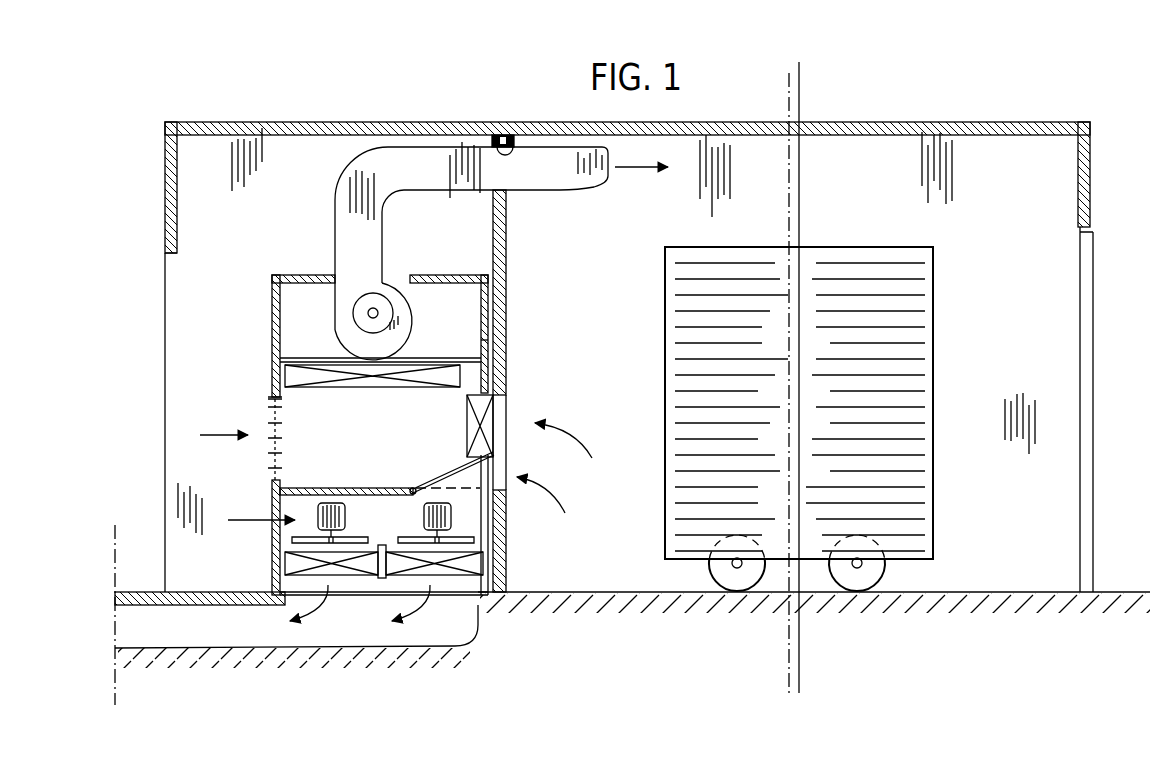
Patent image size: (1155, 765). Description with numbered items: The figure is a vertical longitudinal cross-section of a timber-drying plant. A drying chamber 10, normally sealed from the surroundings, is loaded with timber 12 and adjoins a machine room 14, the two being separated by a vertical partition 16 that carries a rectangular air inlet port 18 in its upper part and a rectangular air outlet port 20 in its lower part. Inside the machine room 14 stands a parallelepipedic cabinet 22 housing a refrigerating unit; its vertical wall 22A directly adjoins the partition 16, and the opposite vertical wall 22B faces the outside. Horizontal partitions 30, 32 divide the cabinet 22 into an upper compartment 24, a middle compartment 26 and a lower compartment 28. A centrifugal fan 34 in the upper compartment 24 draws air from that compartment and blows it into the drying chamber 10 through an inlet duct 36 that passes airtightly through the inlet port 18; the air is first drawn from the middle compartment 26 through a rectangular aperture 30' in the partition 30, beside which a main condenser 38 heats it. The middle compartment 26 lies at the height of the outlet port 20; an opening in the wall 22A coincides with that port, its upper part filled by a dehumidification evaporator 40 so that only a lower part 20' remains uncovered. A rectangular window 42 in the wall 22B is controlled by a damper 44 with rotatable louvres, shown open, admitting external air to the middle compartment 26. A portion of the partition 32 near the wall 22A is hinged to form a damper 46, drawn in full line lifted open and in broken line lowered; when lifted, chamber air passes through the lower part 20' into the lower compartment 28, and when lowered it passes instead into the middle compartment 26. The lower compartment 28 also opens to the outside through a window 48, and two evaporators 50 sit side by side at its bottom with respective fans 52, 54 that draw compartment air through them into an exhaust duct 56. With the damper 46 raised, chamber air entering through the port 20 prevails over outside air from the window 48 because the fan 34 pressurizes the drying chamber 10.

The drying chamber 10 is at (942, 142).
The timber 12 is at (925, 268).
The machine room 14 is at (268, 150).
The vertical partition 16 is at (500, 211).
The air inlet port 18 is at (505, 150).
The air outlet port 20 is at (546, 415).
The lower part of the outlet port 20' is at (531, 477).
The cabinet 22 is at (389, 411).
The vertical wall of the cabinet 22A is at (485, 270).
The vertical wall of the cabinet 22B is at (272, 313).
The upper compartment 24 is at (309, 324).
The middle compartment 26 is at (374, 419).
The lower compartment 28 is at (384, 517).
The horizontal partition 30 is at (527, 330).
The rectangular aperture 30' is at (380, 336).
The horizontal partition 32 is at (290, 488).
The centrifugal fan 34 is at (403, 292).
The inlet duct 36 is at (578, 182).
The main condenser 38 is at (333, 378).
The dehumidification evaporator 40 is at (467, 425).
The rectangular window 42 is at (270, 398).
The damper with rotatable louvres 44 is at (270, 462).
The hinged damper 46 is at (448, 472).
The window 48 is at (272, 511).
The evaporators 50 is at (290, 562).
The fan 52 is at (335, 503).
The fan 54 is at (452, 521).
The exhaust duct 56 is at (360, 611).